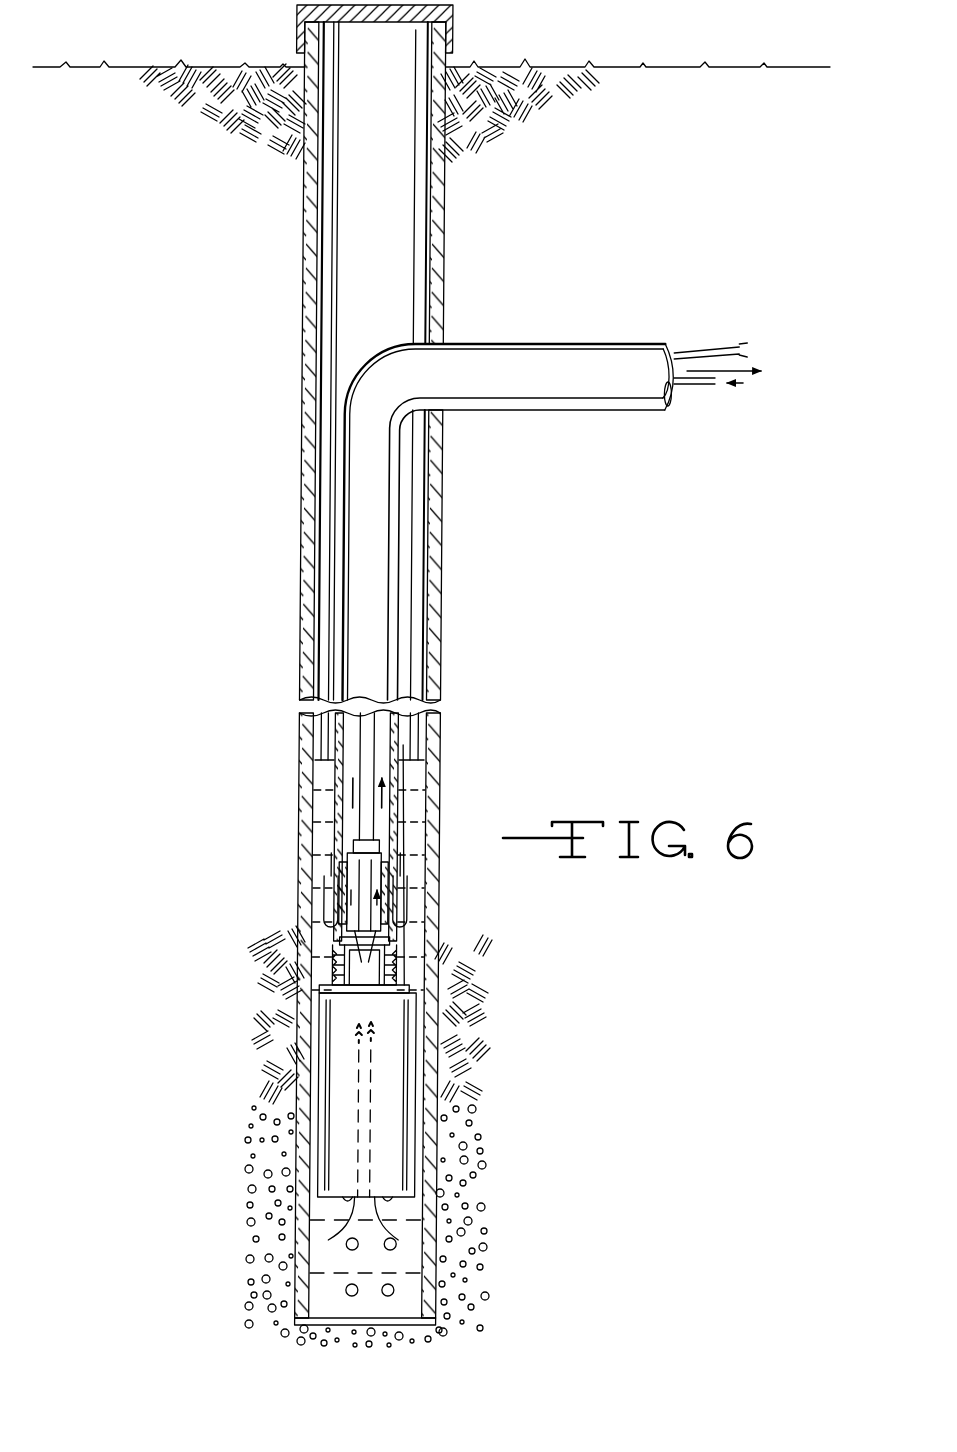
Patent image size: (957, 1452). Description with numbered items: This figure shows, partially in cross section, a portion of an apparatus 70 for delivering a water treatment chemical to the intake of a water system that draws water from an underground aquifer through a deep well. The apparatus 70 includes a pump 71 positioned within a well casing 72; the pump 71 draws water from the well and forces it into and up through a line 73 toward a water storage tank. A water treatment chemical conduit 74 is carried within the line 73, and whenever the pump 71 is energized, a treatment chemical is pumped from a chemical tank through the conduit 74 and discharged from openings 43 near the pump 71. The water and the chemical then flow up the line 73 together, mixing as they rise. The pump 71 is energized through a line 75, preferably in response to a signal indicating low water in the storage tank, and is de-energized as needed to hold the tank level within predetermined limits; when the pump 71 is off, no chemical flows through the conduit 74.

The openings 43 is at (372, 912).
The apparatus 70 is at (470, 1100).
The pump 71 is at (308, 1212).
The well casing 72 is at (442, 900).
The line 73 is at (545, 412).
The water treatment chemical conduit 74 is at (700, 388).
The line 75 is at (710, 352).